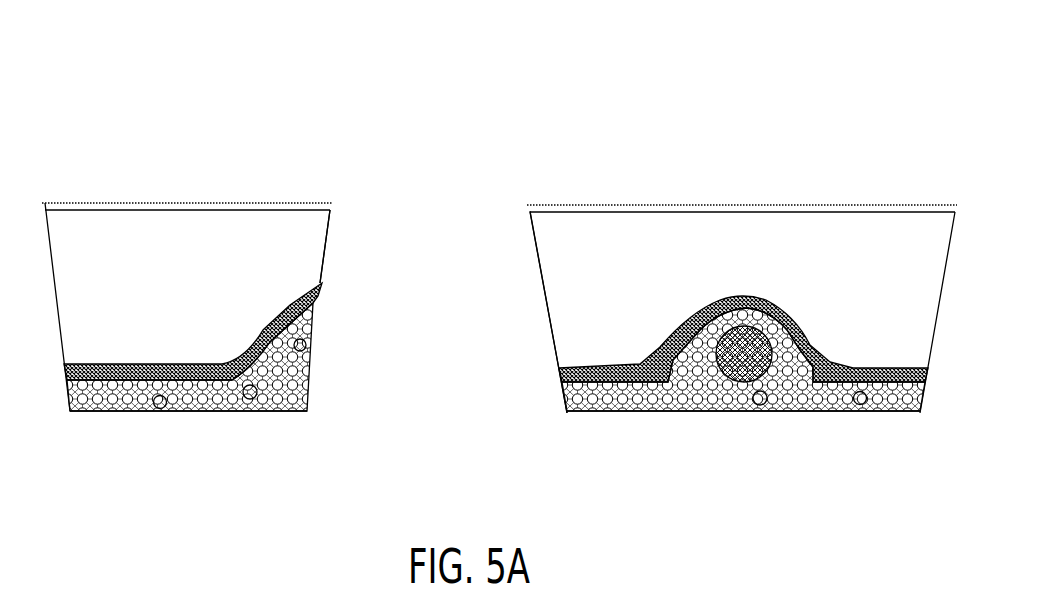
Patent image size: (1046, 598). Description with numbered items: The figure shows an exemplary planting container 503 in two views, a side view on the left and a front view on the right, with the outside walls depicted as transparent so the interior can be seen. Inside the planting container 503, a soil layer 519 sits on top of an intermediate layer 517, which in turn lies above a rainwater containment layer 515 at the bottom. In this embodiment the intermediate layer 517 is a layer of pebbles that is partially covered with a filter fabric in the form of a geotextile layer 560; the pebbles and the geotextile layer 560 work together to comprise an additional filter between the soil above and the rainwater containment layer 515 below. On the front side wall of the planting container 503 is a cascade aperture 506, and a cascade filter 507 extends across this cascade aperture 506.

The planting container 503 is at (570, 93).
The soil layer 519 is at (555, 242).
The geotextile layer 560 is at (702, 307).
The intermediate layer 517 is at (570, 377).
The cascade filter 507 is at (735, 377).
The cascade aperture 506 is at (745, 387).
The rainwater containment layer 515 is at (598, 398).